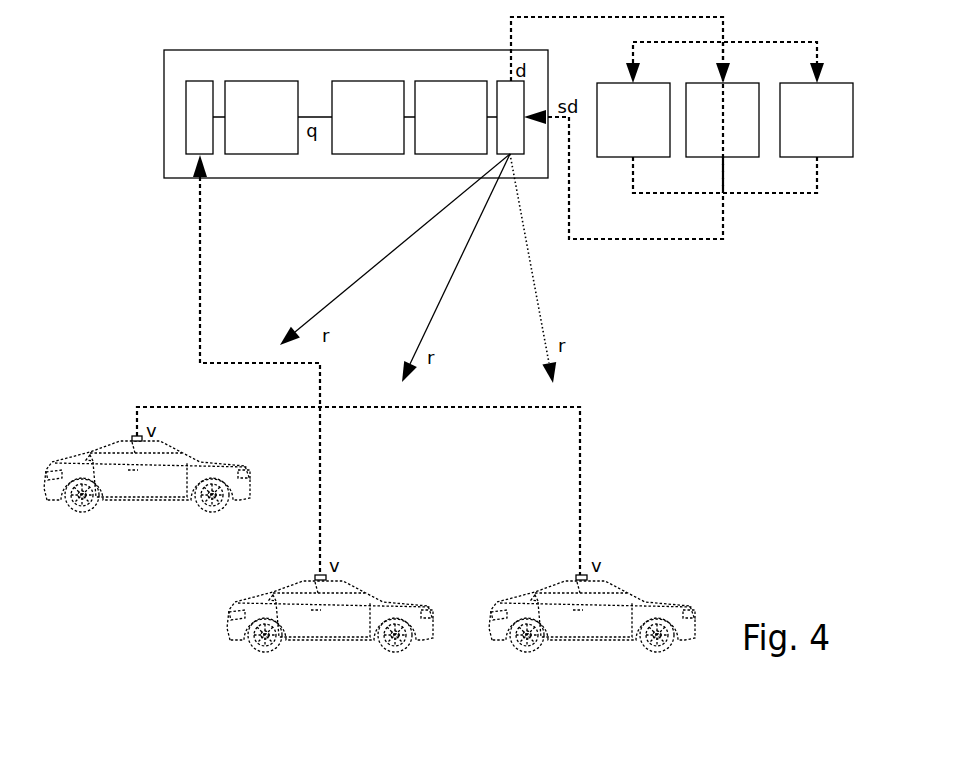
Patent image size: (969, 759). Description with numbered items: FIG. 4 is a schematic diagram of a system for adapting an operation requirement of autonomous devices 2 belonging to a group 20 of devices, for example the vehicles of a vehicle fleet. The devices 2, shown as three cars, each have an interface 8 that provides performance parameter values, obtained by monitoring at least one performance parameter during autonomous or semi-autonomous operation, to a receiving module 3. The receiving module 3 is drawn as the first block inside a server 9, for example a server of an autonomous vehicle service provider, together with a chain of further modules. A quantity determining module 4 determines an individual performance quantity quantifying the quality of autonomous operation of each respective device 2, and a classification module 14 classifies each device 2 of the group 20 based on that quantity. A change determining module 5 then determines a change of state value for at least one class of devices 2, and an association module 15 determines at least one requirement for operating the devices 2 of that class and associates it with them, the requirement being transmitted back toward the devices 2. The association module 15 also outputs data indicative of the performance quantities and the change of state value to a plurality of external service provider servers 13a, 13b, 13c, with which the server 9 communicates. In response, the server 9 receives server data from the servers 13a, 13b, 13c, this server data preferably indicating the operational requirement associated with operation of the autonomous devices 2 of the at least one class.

The autonomous device 2 is at (95, 450).
The receiving module 3 is at (200, 81).
The quantity determining module 4 is at (255, 81).
The change determining module 5 is at (448, 81).
The interface 8 is at (132, 436).
The server 9 is at (164, 178).
The external service provider server 13a is at (617, 136).
The external service provider server 13b is at (706, 136).
The external service provider server 13c is at (801, 136).
The classification module 14 is at (365, 81).
The association module 15 is at (500, 81).
The group of devices 20 is at (648, 478).